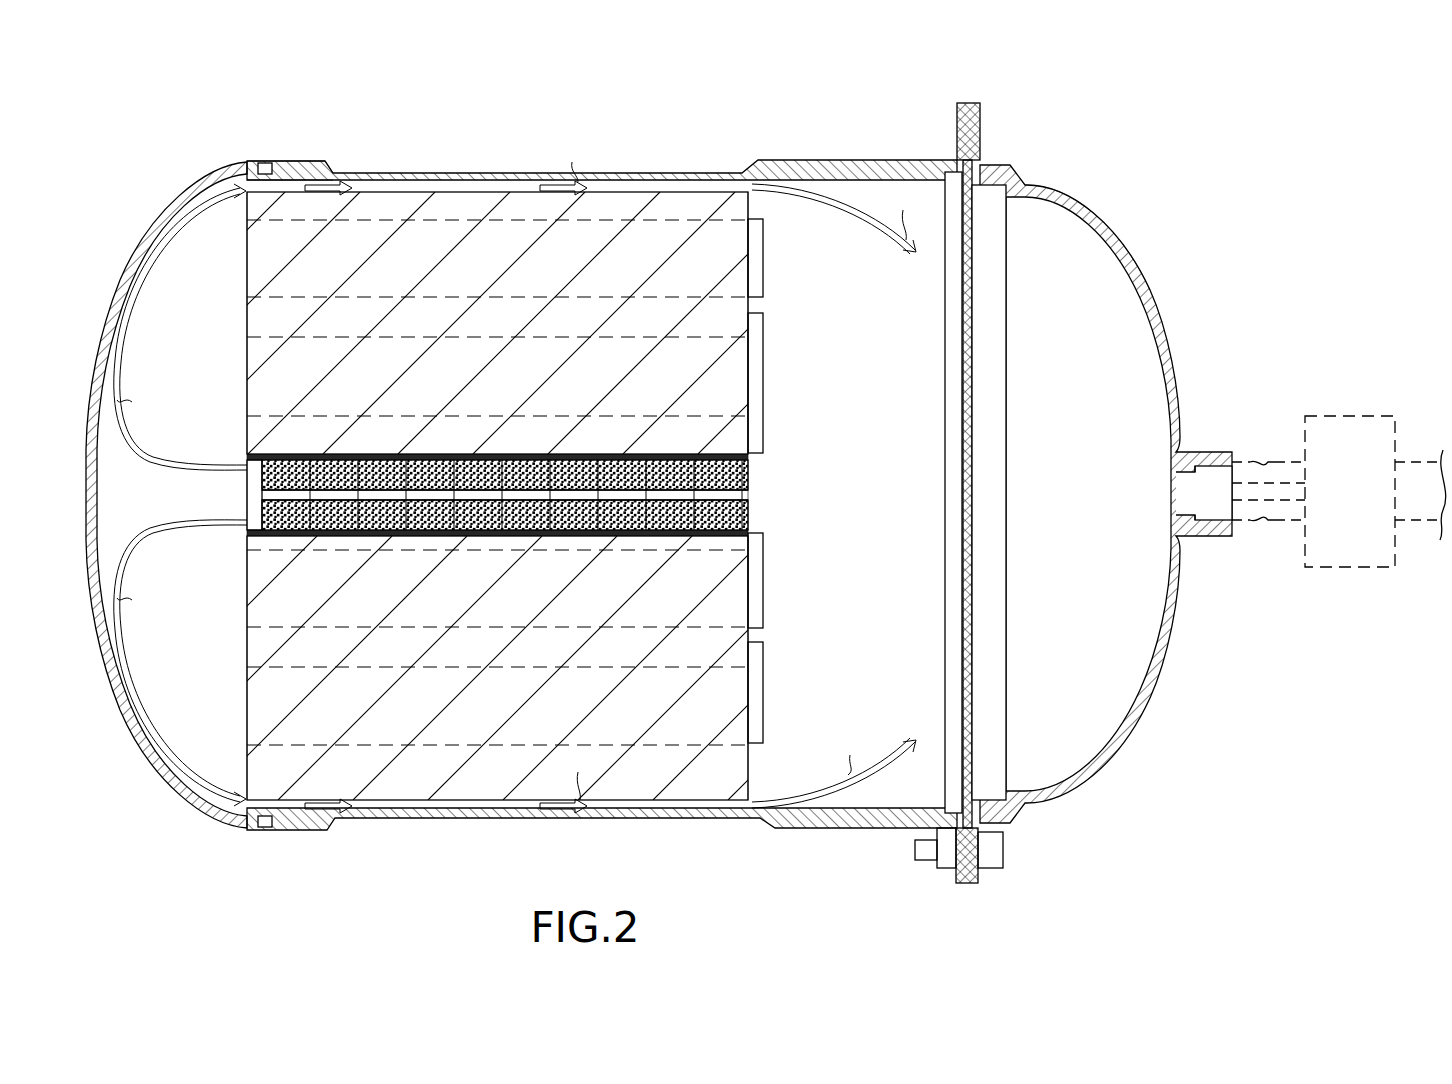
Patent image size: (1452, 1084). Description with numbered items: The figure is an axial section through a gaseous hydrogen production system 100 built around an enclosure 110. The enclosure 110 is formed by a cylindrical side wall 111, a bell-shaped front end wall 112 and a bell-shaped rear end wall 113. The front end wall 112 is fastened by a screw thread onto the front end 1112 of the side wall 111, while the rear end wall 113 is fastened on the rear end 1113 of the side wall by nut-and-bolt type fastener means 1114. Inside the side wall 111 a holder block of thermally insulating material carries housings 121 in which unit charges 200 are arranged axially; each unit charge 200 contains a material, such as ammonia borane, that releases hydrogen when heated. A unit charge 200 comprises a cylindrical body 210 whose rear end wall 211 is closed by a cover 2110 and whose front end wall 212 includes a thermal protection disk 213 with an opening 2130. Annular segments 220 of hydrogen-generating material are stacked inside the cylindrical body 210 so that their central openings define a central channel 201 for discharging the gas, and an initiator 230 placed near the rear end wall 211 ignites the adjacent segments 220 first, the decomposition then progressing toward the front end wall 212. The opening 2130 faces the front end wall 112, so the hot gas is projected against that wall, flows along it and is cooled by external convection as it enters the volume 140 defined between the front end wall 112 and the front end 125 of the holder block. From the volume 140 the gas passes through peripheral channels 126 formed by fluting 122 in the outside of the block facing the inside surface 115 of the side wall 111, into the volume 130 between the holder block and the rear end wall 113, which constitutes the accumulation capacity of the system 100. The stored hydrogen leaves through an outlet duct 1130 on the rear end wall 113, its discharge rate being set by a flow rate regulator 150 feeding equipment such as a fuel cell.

The gaseous hydrogen production system 100 is at (1122, 178).
The enclosure 110 is at (665, 473).
The side wall 111 is at (610, 172).
The front end wall 112 is at (168, 197).
The rear end wall 113 is at (1112, 494).
The inside surface 115 is at (652, 186).
The housings 121 is at (505, 330).
The fluting 122 is at (470, 230).
The front end 125 is at (242, 600).
The peripheral channels 126 is at (357, 175).
The volume 130 is at (864, 560).
The volume 140 is at (189, 360).
The flow rate regulator 150 is at (1365, 420).
The unit charge 200 is at (529, 480).
The central channel 201 is at (440, 495).
The cylindrical body 210 is at (510, 478).
The rear end wall 211 is at (762, 530).
The front end wall 212 is at (247, 458).
The thermal protection disk 213 is at (250, 528).
The annular segments 220 is at (628, 515).
The initiator 230 is at (762, 461).
The front end 1112 is at (325, 165).
The rear end 1113 is at (965, 110).
The nut-and-bolt type fastener means 1114 is at (1003, 848).
The outlet duct 1130 is at (1215, 450).
The cover 2110 is at (762, 496).
The opening 2130 is at (262, 492).